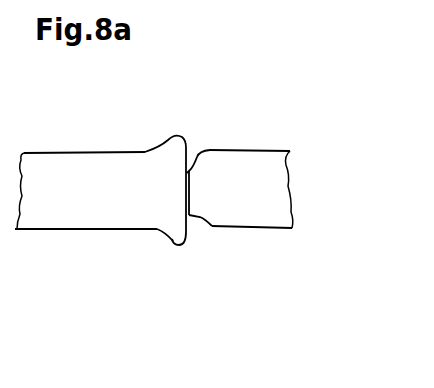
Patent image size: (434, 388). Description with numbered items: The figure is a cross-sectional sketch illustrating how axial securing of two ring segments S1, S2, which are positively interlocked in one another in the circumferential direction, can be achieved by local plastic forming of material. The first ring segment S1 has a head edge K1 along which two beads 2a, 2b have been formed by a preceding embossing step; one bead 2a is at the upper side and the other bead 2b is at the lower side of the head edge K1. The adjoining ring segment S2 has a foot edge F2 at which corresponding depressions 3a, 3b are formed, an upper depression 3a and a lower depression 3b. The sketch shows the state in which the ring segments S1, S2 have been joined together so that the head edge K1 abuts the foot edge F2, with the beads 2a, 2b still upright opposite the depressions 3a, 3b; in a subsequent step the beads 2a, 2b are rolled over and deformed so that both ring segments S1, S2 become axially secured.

The ring segment S1 is at (101, 210).
The ring segment S2 is at (242, 210).
The bead 2a is at (176, 140).
The bead 2b is at (173, 248).
The depression 3a is at (196, 157).
The depression 3b is at (211, 239).
The head edge K1 is at (148, 272).
The foot edge F2 is at (205, 264).